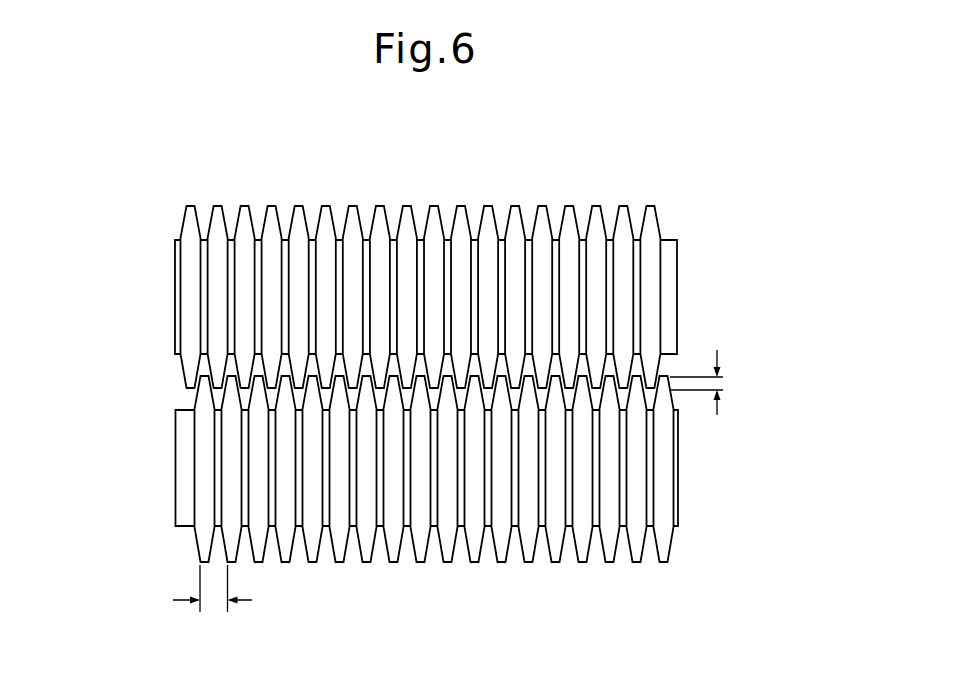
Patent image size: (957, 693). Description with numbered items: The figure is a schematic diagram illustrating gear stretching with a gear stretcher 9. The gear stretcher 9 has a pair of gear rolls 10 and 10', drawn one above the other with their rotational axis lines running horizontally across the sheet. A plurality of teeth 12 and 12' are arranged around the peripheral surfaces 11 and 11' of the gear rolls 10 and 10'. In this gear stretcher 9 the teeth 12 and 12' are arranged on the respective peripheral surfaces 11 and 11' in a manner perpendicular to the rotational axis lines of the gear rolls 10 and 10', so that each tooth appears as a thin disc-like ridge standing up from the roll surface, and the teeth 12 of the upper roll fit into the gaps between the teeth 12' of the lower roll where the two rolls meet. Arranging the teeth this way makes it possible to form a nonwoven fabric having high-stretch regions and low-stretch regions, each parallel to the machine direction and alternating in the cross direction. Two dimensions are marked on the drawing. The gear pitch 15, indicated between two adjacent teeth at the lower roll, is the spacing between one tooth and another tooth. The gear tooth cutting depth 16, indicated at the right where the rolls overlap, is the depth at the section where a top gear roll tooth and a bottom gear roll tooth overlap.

The gear stretcher 9 is at (186, 156).
The gear roll 10 is at (500, 283).
The gear roll 10' is at (356, 470).
The peripheral surface 11 is at (467, 297).
The peripheral surface 11' is at (387, 468).
The teeth 12 is at (421, 266).
The teeth 12' is at (439, 501).
The gear pitch 15 is at (212, 607).
The gear tooth cutting depth 16 is at (717, 382).